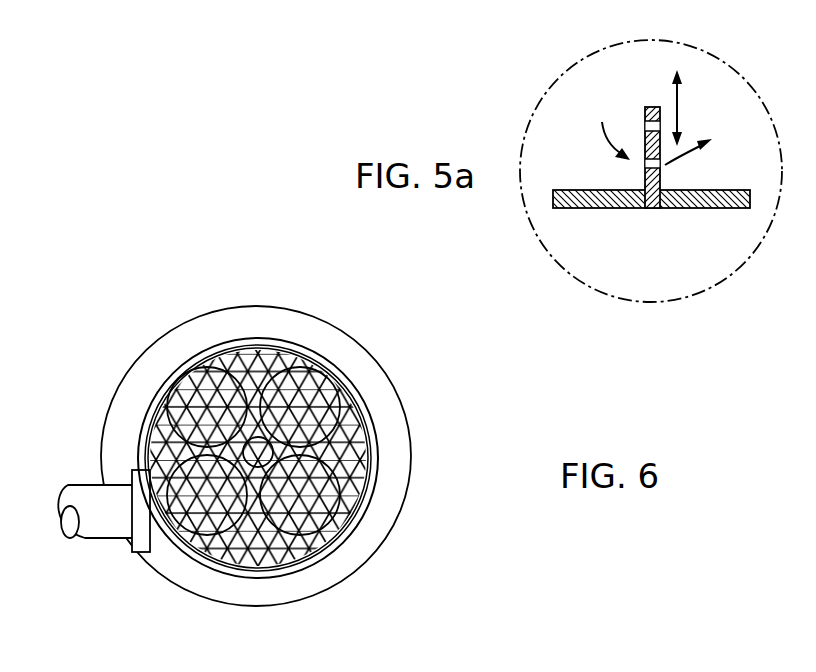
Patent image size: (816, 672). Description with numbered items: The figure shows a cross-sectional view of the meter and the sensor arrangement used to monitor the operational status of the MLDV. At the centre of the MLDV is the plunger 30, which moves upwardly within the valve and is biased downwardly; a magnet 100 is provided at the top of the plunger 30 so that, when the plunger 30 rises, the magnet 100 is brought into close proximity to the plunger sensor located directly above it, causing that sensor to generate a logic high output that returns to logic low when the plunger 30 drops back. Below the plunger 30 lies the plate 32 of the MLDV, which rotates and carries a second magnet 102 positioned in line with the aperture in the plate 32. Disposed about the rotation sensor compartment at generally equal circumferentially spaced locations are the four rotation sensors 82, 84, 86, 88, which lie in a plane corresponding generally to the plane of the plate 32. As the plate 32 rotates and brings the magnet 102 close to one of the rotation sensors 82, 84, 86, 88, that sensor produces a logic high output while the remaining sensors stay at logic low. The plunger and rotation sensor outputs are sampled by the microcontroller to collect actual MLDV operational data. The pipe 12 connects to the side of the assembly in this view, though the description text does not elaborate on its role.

In FIG. 6, the inlet pipe 12 is at (107, 527).
In FIG. 5a, the plunger 30 is at (645, 143).
In FIG. 5a, the plate 32 is at (707, 197).
In FIG. 6, the rotation sensor 82 is at (157, 360).
In FIG. 6, the rotation sensor 84 is at (353, 362).
In FIG. 6, the rotation sensor 86 is at (355, 543).
In FIG. 6, the rotation sensor 88 is at (167, 557).
In FIG. 5a, the magnet 100 is at (657, 107).
In FIG. 6, the magnet 100 is at (370, 453).
In FIG. 6, the magnet 102 is at (197, 367).